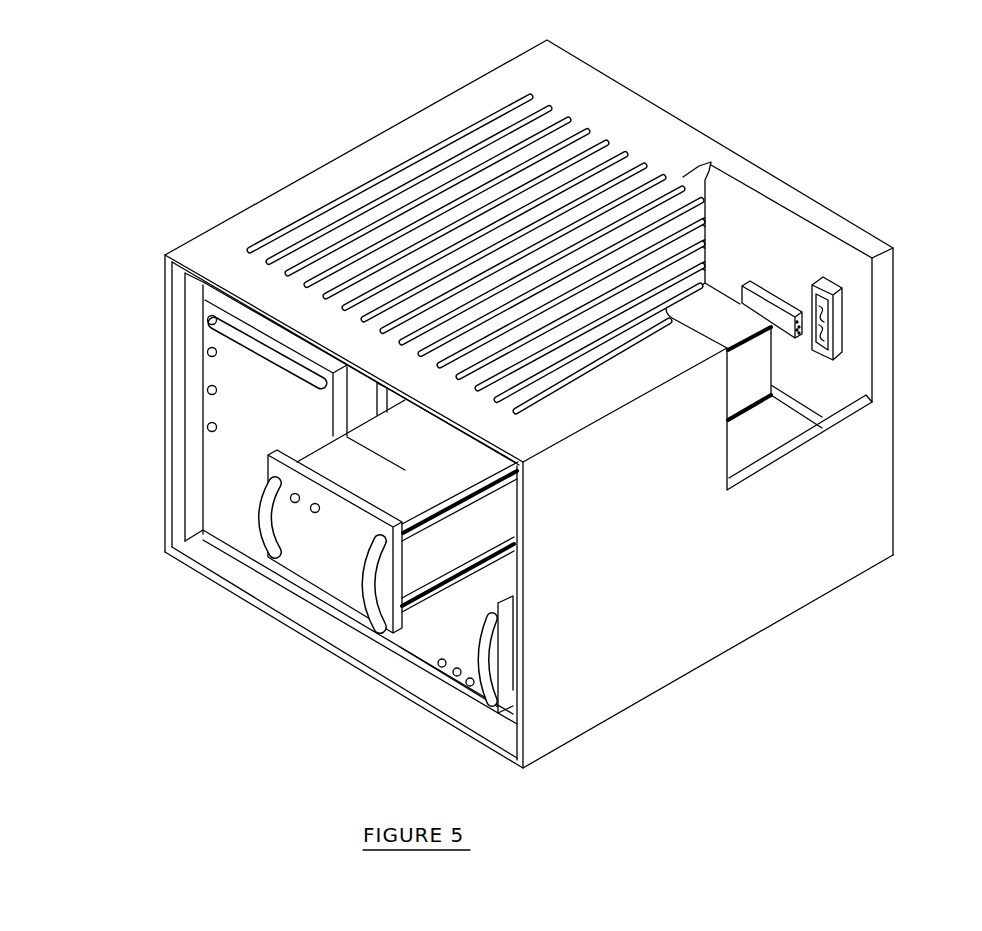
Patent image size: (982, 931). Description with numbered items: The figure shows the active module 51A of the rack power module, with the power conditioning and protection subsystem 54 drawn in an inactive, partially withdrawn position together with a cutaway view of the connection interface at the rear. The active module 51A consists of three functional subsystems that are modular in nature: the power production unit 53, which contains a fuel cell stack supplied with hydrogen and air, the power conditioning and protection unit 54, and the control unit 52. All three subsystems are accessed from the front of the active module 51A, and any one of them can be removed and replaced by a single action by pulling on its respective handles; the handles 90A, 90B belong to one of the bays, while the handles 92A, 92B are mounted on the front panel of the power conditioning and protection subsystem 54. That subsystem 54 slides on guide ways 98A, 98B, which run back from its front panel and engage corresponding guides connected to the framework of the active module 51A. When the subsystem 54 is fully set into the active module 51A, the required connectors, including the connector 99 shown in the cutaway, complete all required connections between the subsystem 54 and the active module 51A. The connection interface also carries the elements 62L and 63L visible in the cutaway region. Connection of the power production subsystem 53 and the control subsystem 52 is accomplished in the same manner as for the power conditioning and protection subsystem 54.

The active module 51A is at (549, 35).
The connector 99 is at (748, 298).
The connector pins 63L is at (833, 328).
The power connector 62L is at (894, 354).
The handle 90A is at (215, 336).
The handle 90B is at (228, 546).
The power production unit 53 is at (222, 474).
The handle 92A is at (268, 550).
The handle 92B is at (363, 598).
The power conditioning and protection unit 54 is at (442, 623).
The control unit 52 is at (424, 642).
The guide way 98A is at (480, 497).
The guide way 98B is at (483, 563).